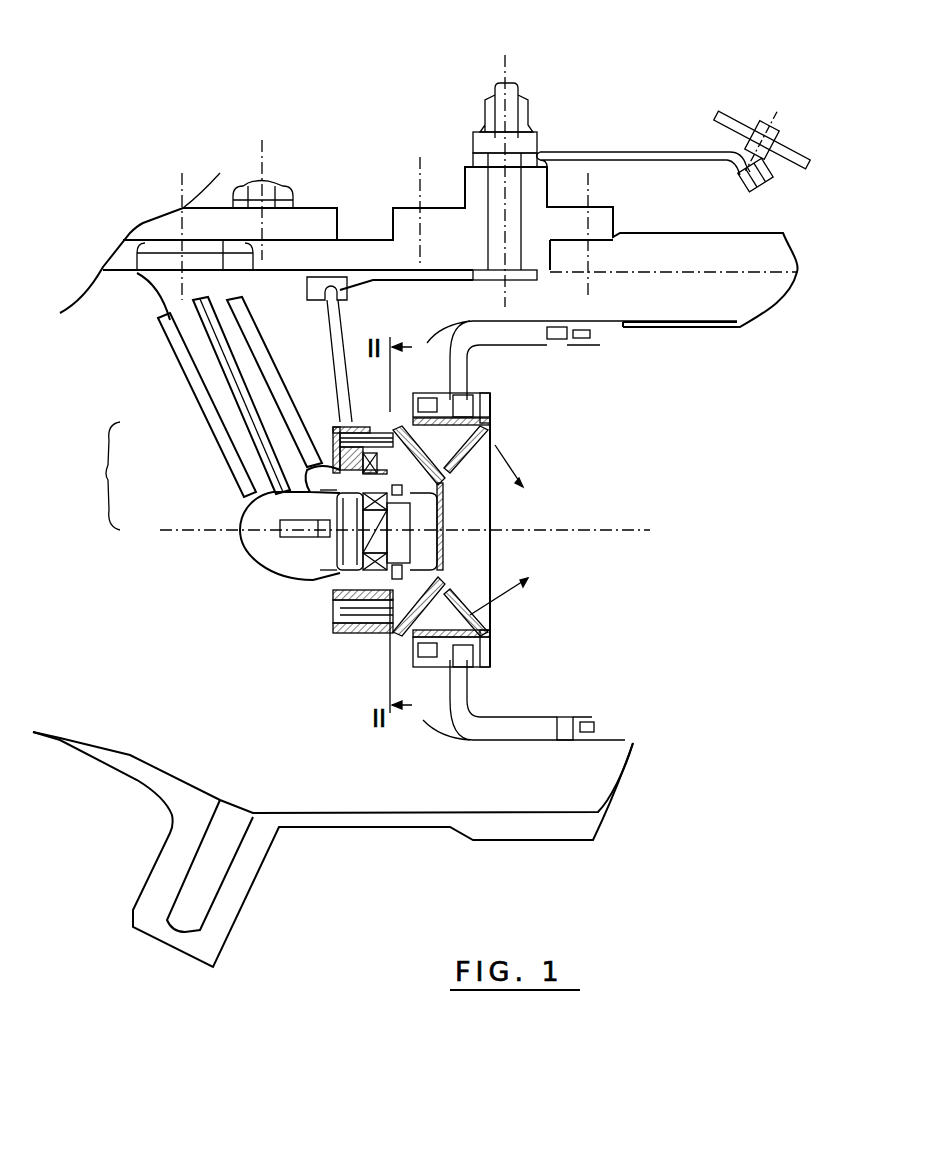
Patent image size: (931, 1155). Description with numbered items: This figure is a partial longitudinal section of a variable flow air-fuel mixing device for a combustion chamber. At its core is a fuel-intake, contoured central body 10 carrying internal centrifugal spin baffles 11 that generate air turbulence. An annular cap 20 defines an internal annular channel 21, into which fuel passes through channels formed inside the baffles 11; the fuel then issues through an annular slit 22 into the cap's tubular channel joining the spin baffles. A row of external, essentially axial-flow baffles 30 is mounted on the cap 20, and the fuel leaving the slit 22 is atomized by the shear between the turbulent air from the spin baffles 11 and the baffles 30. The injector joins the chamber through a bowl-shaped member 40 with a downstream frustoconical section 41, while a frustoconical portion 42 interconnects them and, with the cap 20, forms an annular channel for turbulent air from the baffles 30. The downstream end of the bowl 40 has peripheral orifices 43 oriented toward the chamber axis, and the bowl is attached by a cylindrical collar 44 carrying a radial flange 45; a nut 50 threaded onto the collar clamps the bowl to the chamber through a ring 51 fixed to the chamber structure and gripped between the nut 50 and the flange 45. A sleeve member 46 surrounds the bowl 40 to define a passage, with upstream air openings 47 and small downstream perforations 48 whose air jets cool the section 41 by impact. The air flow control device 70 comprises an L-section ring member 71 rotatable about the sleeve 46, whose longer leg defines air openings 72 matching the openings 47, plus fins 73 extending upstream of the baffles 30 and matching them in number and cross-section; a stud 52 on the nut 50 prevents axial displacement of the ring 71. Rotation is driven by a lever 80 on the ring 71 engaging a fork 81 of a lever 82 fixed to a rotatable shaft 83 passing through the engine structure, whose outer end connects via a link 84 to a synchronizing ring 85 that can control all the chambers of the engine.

The central body 10 is at (273, 537).
The spin baffles 11 is at (355, 520).
The annular cap 20 is at (388, 505).
The annular channel 21 is at (330, 612).
The annular slit 22 is at (435, 572).
The external baffles 30 is at (330, 628).
The bowl-shaped member 40 is at (383, 628).
The frustoconical section 41 is at (450, 643).
The frustoconical portion 42 is at (425, 606).
The orifices 43 is at (470, 627).
The cylindrical collar 44 is at (490, 410).
The radial flange 45 is at (490, 422).
The sleeve member 46 is at (400, 410).
The air openings 47 is at (359, 395).
The perforations 48 is at (447, 405).
The nut 50 is at (410, 423).
The ring 51 is at (490, 397).
The stud 52 is at (447, 460).
The air flow control device 70 is at (93, 476).
The ring member 71 is at (345, 458).
The air openings 72 is at (345, 435).
The fins 73 is at (322, 485).
The lever 80 is at (327, 343).
The fork 81 is at (315, 283).
The lever 82 is at (377, 420).
The rotatable shaft 83 is at (508, 90).
The link 84 is at (648, 157).
The synchronizing ring 85 is at (737, 128).